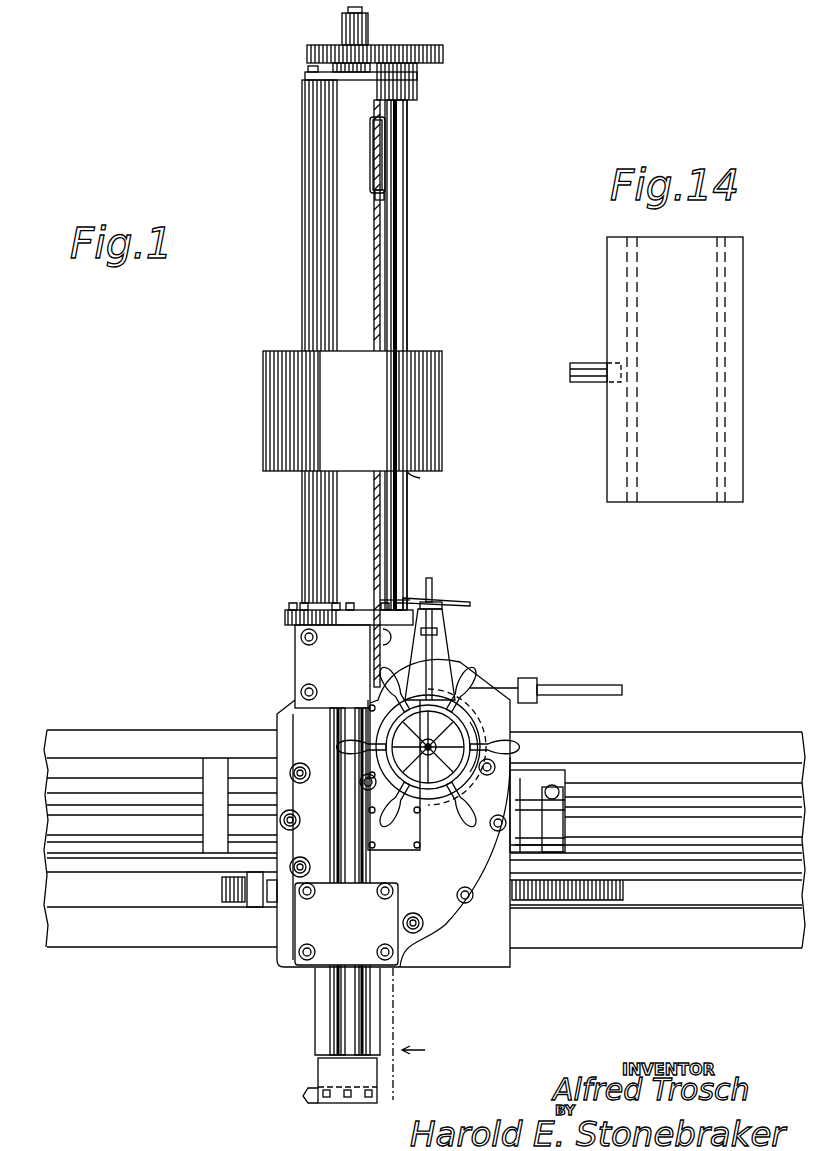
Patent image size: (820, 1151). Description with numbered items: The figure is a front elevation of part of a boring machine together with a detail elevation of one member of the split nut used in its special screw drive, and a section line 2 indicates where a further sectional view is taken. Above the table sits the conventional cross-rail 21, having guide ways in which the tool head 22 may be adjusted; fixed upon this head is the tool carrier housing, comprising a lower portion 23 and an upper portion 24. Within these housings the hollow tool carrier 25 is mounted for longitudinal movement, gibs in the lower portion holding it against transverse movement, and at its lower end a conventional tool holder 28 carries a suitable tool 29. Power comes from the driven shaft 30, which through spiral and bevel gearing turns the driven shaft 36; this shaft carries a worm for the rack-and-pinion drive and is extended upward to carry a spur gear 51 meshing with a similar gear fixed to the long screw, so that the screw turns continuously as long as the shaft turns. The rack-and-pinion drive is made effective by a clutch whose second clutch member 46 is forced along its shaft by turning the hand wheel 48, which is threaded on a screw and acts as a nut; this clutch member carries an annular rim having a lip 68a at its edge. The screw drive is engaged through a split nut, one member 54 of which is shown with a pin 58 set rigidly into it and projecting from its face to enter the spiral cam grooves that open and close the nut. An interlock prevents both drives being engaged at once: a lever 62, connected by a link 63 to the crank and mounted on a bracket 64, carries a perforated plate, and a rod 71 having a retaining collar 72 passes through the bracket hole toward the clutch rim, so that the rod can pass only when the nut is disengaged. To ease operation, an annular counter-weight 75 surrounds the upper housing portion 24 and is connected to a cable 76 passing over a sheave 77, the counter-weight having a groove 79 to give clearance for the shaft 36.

In FIG. 1, the section line 2 is at (403, 556).
In FIG. 1, the cross-rail 21 is at (170, 741).
In FIG. 1, the tool head 22 is at (492, 962).
In FIG. 1, the lower portion of tool carrier housing 23 is at (312, 652).
In FIG. 1, the upper portion of tool carrier housing 24 is at (312, 512).
In FIG. 1, the tool carrier 25 is at (350, 868).
In FIG. 1, the tool holder 28 is at (318, 1065).
In FIG. 1, the tool 29 is at (311, 1097).
In FIG. 1, the driven shaft 30 is at (708, 790).
In FIG. 1, the driven shaft 36 is at (407, 296).
In FIG. 1, the second clutch member 46 is at (474, 738).
In FIG. 1, the hand wheel 48 is at (476, 724).
In FIG. 1, the spur gear 51 is at (317, 45).
In FIG. 14, the split nut member 54 is at (706, 246).
In FIG. 14, the pin 58 is at (585, 363).
In FIG. 1, the lever 62 is at (462, 601).
In FIG. 1, the link 63 is at (410, 597).
In FIG. 1, the bracket 64 is at (440, 609).
In FIG. 1, the lip 68a is at (450, 805).
In FIG. 1, the rod 71 is at (450, 648).
In FIG. 1, the collar 72 is at (438, 632).
In FIG. 1, the annular counter-weight 75 is at (442, 406).
In FIG. 1, the cable 76 is at (377, 233).
In FIG. 1, the sheave 77 is at (383, 177).
In FIG. 1, the groove 79 is at (407, 476).